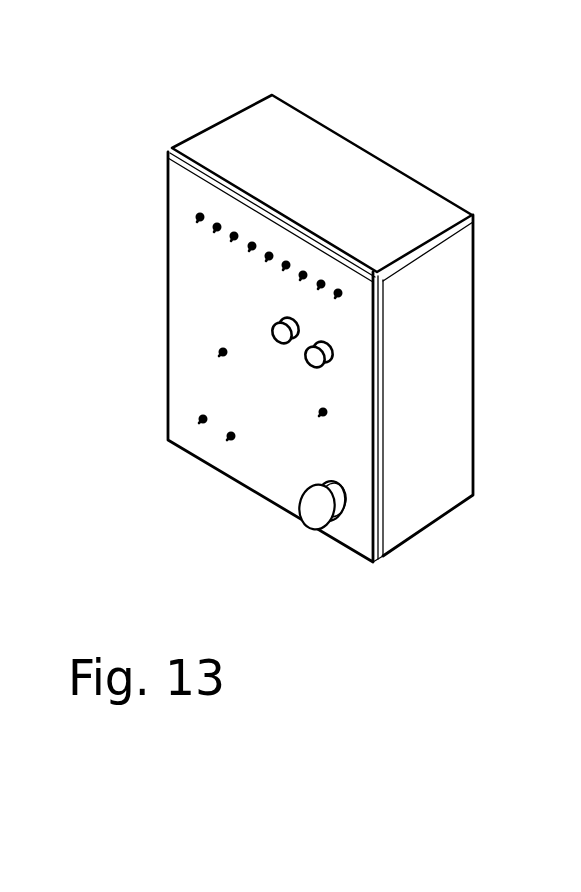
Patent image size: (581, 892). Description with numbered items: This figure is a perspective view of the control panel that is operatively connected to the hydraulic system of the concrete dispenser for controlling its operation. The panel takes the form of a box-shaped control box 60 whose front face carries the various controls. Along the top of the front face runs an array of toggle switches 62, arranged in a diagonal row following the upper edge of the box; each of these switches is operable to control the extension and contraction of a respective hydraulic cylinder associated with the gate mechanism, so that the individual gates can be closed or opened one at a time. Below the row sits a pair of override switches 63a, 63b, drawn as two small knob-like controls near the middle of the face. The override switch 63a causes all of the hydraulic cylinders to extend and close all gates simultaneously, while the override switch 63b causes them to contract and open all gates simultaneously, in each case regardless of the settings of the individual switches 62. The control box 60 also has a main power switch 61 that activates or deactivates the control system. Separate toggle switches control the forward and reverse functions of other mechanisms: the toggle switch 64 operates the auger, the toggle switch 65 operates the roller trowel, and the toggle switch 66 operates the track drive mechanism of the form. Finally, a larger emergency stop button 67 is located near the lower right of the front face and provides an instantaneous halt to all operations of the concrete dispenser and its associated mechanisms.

The control box 60 is at (330, 165).
The main power switch 61 is at (326, 412).
The array of toggle switches 62 is at (210, 258).
The override switch 63a is at (279, 343).
The override switch 63b is at (333, 352).
The toggle switch 64 is at (200, 421).
The toggle switch 65 is at (229, 439).
The toggle switch 66 is at (218, 352).
The emergency stop button 67 is at (315, 510).